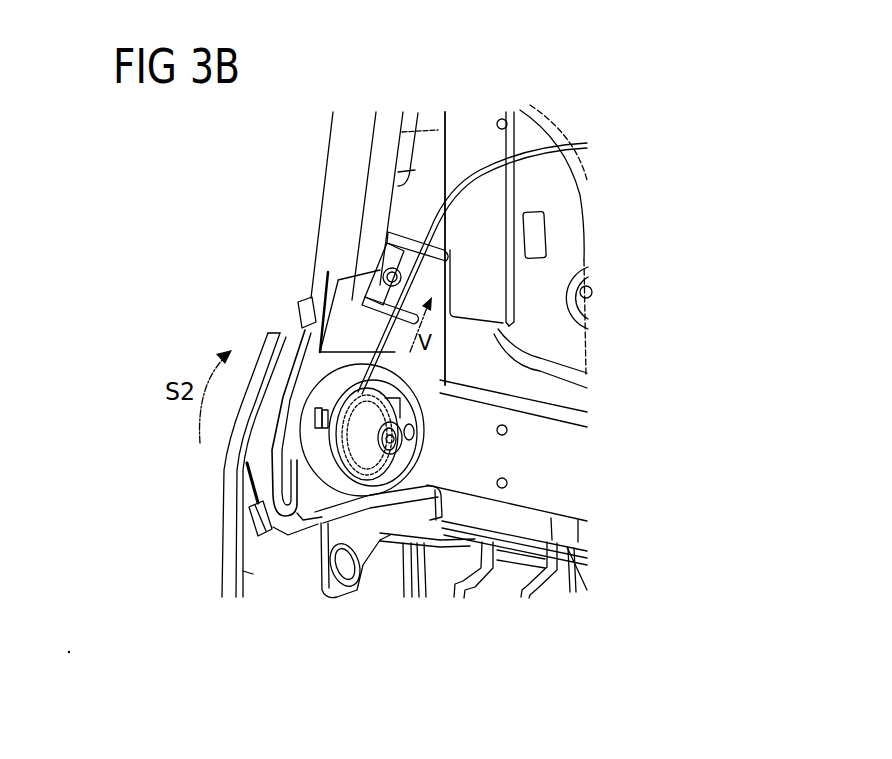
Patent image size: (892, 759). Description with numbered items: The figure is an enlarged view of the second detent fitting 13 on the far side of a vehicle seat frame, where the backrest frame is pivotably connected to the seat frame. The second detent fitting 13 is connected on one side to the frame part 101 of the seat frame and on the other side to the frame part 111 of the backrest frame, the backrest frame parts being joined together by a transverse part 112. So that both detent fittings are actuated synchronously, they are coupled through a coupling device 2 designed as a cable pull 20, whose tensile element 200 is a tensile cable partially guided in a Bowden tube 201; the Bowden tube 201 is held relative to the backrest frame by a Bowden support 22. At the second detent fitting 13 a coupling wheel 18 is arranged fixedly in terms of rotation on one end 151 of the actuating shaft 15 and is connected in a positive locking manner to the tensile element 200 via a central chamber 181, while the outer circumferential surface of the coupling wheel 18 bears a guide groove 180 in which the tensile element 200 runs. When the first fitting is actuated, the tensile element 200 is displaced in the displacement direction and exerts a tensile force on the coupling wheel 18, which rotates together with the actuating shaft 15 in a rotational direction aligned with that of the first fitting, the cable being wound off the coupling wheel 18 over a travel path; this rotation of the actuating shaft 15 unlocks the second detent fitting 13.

The coupling device 2 is at (543, 115).
The cable pull 20 is at (487, 150).
The Bowden support 22 is at (380, 283).
The frame part 111 is at (390, 128).
The transverse part 112 is at (573, 567).
The Bowden tube 201 is at (427, 215).
The tensile element 200 is at (395, 352).
The guide groove 180 is at (330, 454).
The central chamber 181 is at (415, 436).
The frame part 101 is at (252, 573).
The second detent fitting 13 is at (288, 550).
The coupling wheel 18 is at (373, 485).
The actuating shaft 15 is at (400, 460).
The end of actuating shaft 151 is at (412, 505).